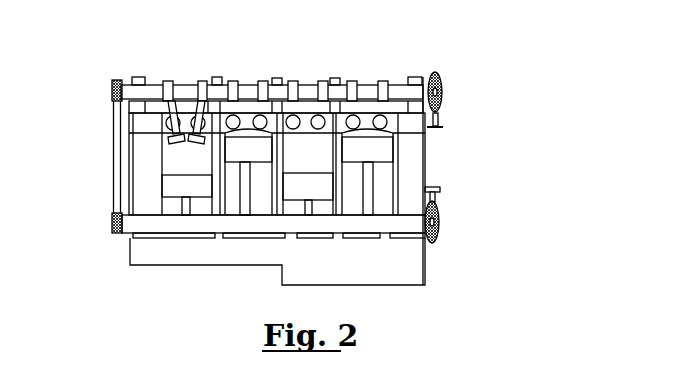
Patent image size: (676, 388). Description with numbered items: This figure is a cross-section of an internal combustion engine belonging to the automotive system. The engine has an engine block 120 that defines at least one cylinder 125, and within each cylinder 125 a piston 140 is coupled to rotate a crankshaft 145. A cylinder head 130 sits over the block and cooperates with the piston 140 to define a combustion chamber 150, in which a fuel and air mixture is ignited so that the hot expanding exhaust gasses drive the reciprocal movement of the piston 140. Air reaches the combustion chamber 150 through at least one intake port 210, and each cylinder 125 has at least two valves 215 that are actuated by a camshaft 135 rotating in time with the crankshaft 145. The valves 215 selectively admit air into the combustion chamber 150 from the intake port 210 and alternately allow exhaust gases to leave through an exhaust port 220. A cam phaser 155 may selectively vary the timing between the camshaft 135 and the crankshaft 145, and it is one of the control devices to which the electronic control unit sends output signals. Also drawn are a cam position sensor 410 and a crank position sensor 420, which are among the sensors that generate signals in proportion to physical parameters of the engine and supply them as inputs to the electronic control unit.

The engine block 120 is at (128, 176).
The cylinder 125 is at (284, 162).
The cylinder head 130 is at (128, 131).
The camshaft 135 is at (184, 85).
The piston 140 is at (318, 184).
The crankshaft 145 is at (155, 227).
The combustion chamber 150 is at (370, 137).
The cam phaser 155 is at (112, 92).
The intake port 210 is at (298, 116).
The valves 215 is at (168, 127).
The exhaust port 220 is at (256, 115).
The cam position sensor 410 is at (440, 128).
The crank position sensor 420 is at (440, 195).